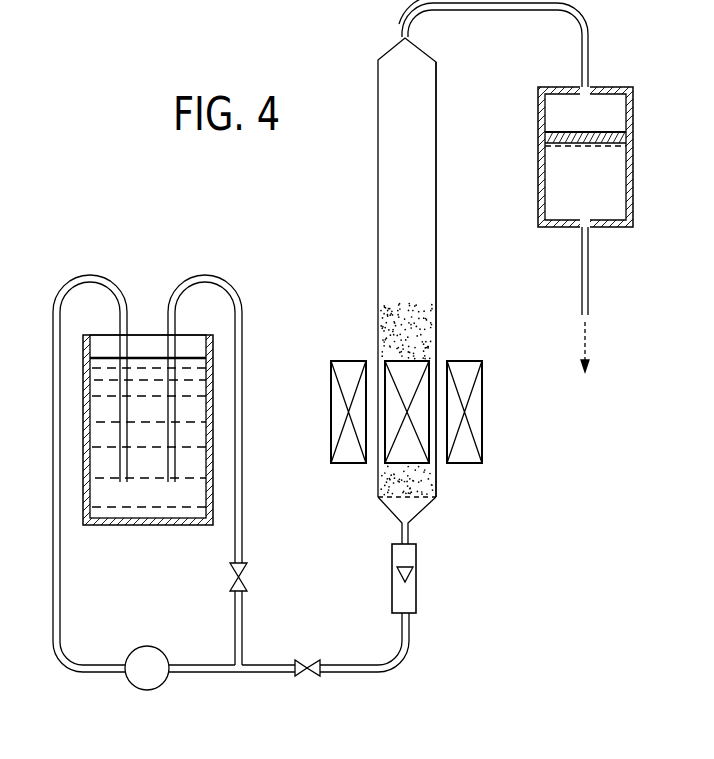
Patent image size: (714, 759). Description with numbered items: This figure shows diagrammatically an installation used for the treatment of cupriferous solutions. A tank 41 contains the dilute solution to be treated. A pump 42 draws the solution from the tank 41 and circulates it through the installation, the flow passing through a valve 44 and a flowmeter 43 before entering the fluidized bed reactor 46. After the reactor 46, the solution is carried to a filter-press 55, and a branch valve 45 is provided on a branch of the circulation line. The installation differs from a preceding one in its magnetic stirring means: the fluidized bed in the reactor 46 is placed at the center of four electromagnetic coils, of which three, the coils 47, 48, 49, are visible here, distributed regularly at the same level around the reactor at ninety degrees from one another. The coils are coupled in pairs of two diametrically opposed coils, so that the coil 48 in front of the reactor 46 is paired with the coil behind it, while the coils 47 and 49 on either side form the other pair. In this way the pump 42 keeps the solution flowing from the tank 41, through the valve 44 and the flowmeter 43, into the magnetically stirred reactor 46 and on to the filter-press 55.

The tank 41 is at (150, 522).
The pump 42 is at (147, 678).
The flowmeter 43 is at (413, 594).
The valve 44 is at (310, 675).
The branch valve 45 is at (247, 582).
The fluidized bed reactor 46 is at (437, 320).
The electromagnetic coil 47 is at (348, 367).
The electromagnetic coil 48 is at (407, 447).
The electromagnetic coil 49 is at (467, 453).
The filter-press 55 is at (537, 140).